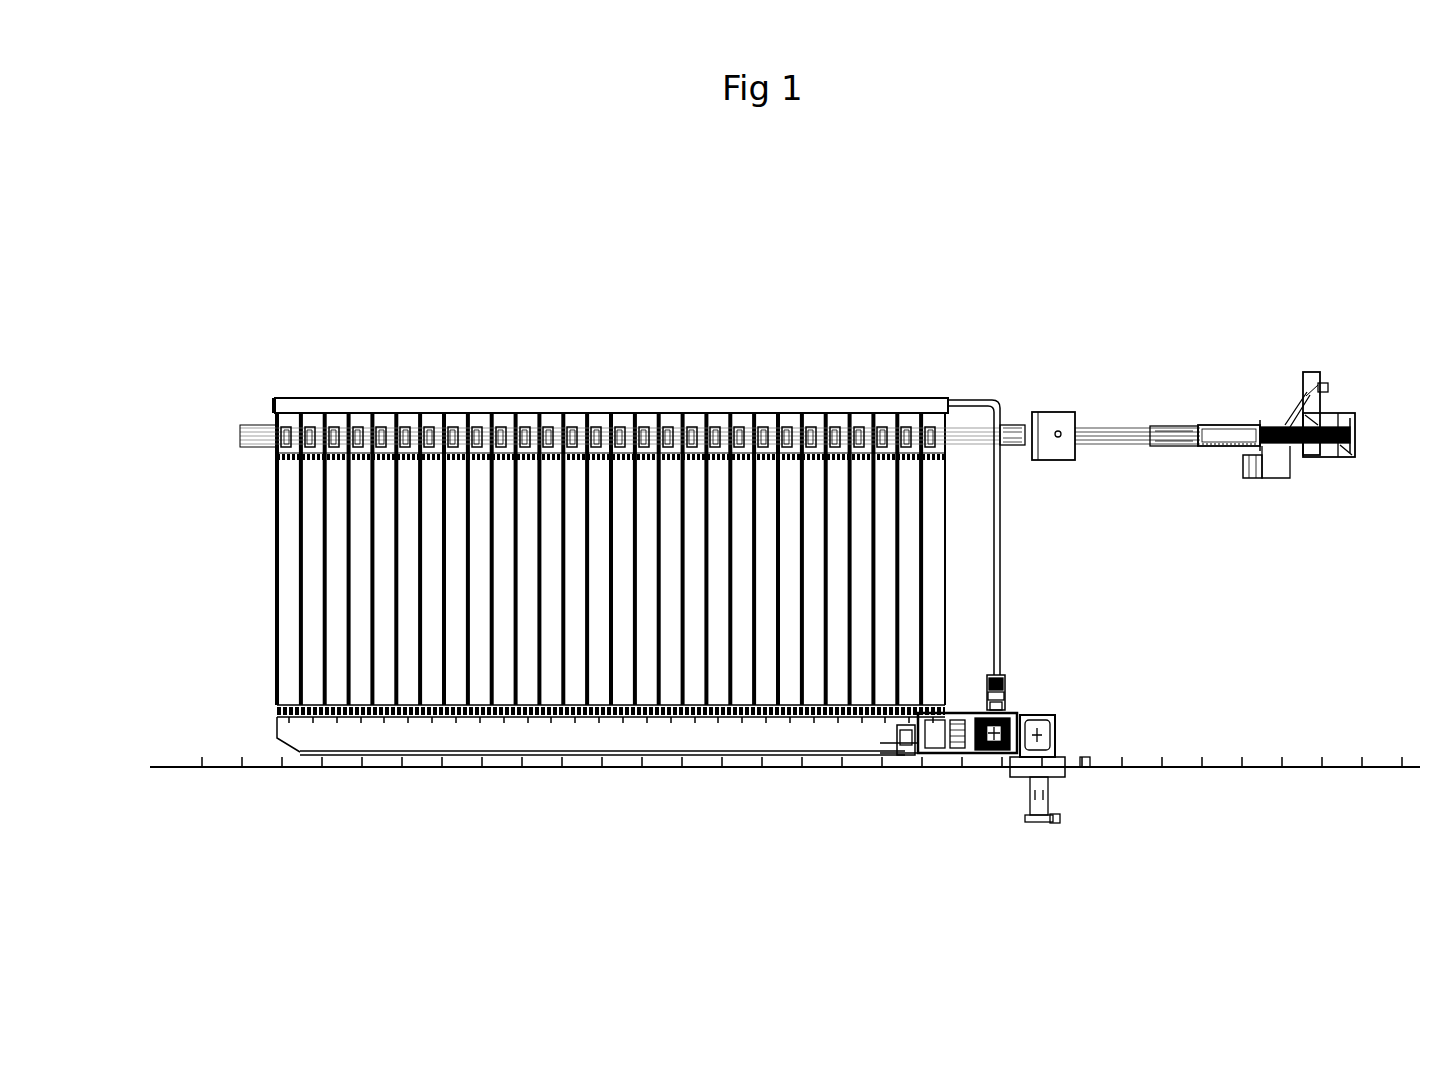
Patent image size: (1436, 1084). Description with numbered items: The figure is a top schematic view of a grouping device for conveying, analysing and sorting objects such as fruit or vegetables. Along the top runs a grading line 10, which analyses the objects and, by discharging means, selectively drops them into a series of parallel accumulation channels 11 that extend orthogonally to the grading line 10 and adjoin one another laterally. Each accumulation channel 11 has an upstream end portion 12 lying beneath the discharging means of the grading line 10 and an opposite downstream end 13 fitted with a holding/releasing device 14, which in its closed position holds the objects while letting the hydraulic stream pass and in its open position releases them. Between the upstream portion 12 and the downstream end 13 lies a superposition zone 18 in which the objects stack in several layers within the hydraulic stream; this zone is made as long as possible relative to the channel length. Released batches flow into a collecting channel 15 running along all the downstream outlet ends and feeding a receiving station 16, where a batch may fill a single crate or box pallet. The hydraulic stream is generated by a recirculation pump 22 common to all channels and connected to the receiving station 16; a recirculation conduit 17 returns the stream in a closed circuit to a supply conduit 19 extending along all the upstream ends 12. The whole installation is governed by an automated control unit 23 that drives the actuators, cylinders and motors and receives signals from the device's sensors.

The grading line 10 is at (1074, 354).
The accumulation channel 11 is at (908, 583).
The upstream end portion 12 is at (720, 475).
The downstream end 13 is at (502, 717).
The holding/releasing device 14 is at (313, 717).
The collecting channel 15 is at (650, 738).
The receiving station 16 is at (958, 792).
The recirculation conduit 17 is at (997, 610).
The superposition zone 18 is at (238, 616).
The supply conduit 19 is at (823, 403).
The recirculation pump 22 is at (1003, 690).
The control unit 23 is at (1250, 482).